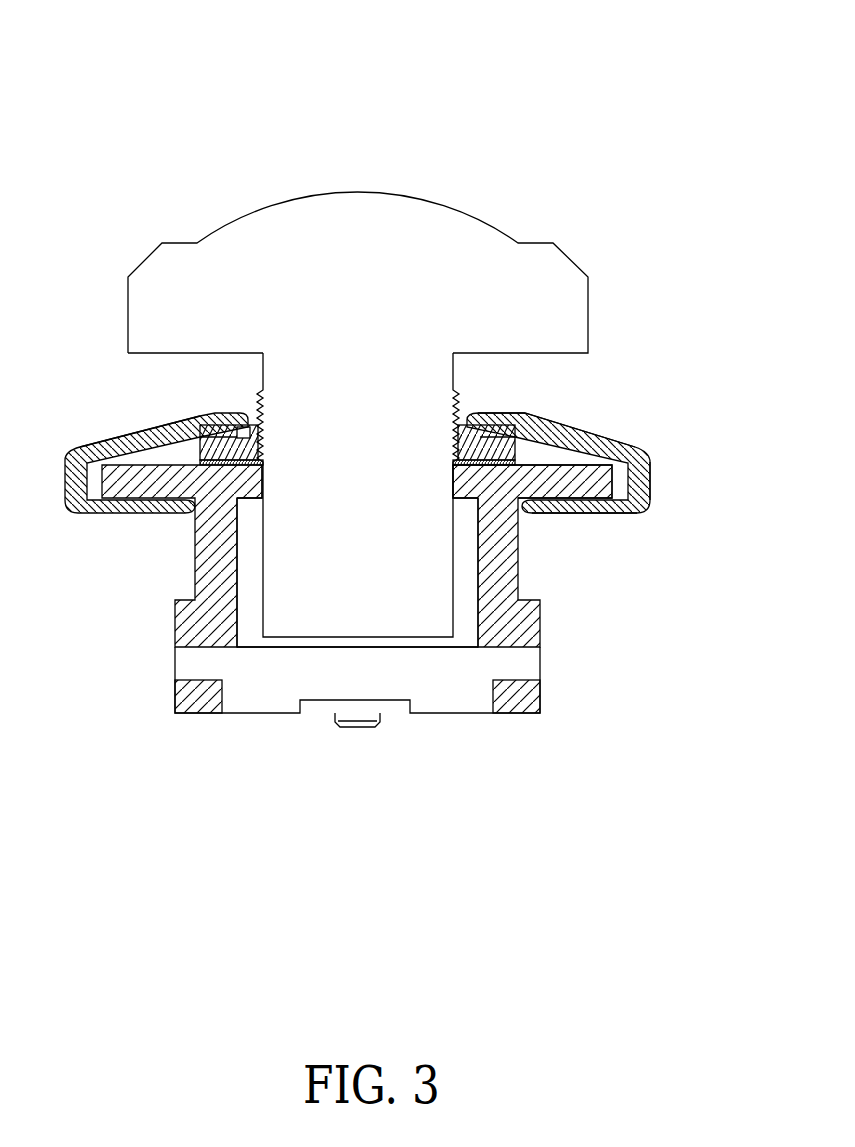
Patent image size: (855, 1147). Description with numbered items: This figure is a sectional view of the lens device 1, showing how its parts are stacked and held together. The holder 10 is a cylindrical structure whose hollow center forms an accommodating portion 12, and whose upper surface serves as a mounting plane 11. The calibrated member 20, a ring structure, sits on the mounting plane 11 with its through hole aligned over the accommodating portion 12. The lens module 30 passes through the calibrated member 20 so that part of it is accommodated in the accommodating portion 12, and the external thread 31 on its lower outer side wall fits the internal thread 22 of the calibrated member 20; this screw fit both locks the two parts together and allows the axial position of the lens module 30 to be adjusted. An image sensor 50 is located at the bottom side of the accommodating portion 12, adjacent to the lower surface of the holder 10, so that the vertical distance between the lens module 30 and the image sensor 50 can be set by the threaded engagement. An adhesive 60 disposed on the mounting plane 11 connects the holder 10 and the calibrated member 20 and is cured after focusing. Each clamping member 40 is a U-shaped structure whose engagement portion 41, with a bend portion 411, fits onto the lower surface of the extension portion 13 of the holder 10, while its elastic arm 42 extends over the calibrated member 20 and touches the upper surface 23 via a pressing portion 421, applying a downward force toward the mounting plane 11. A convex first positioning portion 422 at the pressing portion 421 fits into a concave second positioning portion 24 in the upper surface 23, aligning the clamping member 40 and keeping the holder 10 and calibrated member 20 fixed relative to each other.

The lens device 1 is at (120, 67).
The holder 10 is at (208, 562).
The mounting plane 11 is at (228, 468).
The accommodating portion 12 is at (462, 592).
The extension portion 13 is at (568, 487).
The calibrated member 20 is at (258, 425).
The internal thread 22 is at (470, 430).
The upper surface 23 is at (243, 427).
The second positioning portion 24 is at (262, 437).
The lens module 30 is at (190, 252).
The external thread 31 is at (450, 403).
The clamping member 40 is at (88, 444).
The engagement portion 41 is at (645, 485).
The bend portion 411 is at (643, 513).
The elastic arm 42 is at (592, 437).
The pressing portion 421 is at (503, 415).
The first positioning portion 422 is at (205, 417).
The image sensor 50 is at (317, 708).
The adhesive 60 is at (262, 461).